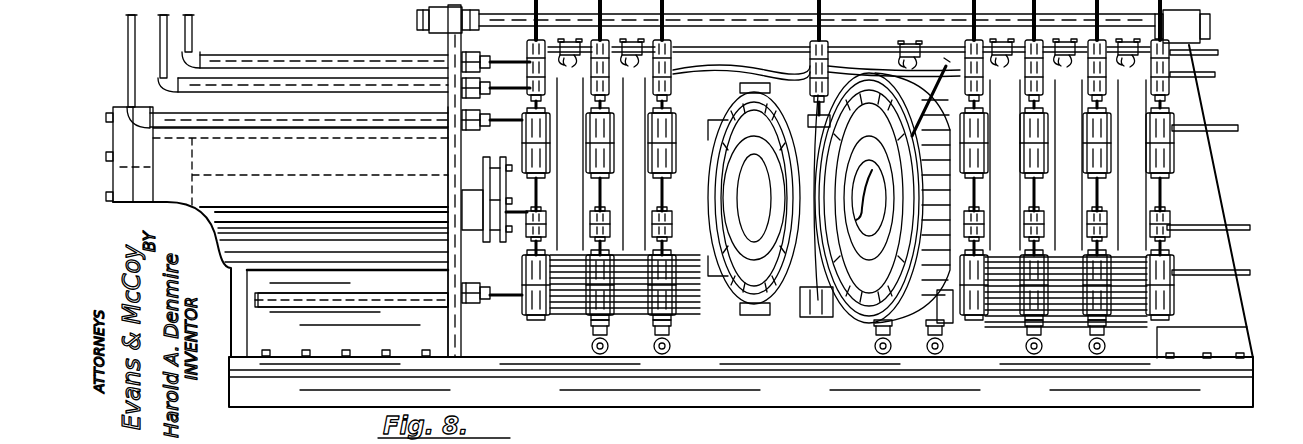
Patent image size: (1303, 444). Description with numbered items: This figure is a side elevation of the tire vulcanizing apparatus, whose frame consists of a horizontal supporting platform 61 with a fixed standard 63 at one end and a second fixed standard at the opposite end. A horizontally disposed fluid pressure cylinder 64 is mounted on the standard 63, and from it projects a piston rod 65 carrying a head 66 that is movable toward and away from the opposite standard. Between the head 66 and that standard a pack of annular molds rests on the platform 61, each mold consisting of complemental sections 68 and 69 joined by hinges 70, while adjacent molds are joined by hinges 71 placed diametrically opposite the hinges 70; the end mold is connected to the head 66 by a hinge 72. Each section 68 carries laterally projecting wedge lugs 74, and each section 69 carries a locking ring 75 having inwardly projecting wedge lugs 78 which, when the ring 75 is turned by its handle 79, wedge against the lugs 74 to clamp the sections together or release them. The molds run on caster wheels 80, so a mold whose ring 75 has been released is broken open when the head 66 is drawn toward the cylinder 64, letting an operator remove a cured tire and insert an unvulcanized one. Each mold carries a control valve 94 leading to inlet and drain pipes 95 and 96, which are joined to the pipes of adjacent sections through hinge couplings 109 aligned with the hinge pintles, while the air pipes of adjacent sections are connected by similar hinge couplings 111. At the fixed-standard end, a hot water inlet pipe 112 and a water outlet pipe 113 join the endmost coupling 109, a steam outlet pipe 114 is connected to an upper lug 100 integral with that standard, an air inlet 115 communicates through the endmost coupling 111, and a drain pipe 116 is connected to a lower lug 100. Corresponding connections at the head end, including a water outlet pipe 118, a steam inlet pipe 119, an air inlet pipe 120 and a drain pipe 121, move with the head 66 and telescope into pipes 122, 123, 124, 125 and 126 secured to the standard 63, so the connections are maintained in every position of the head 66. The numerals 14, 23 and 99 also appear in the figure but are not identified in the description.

The supply header pipe 14 is at (745, 50).
The frame standard 23 is at (1187, 140).
The platform 61 is at (767, 393).
The standard 63 is at (423, 57).
The fluid pressure cylinder 64 is at (283, 242).
The piston rod 65 is at (232, 177).
The head 66 is at (528, 106).
The mold section 68 is at (790, 68).
The mold section 69 is at (840, 318).
The hinges 70 is at (807, 296).
The hinges 71 is at (620, 122).
The hinge 72 is at (526, 137).
The wedge lugs 74 is at (752, 313).
The locking ring 75 is at (923, 357).
The wedge lugs 78 is at (853, 357).
The handle 79 is at (915, 137).
The caster wheels 80 is at (693, 357).
The control valve 94 is at (883, 59).
The inlet pipe 95 is at (896, 48).
The drain pipe 96 is at (936, 62).
The drum 99 is at (978, 267).
The lug 100 is at (1117, 125).
The hinge couplings 109 is at (986, 78).
The hinge couplings 111 is at (616, 213).
The hot water inlet pipe 112 is at (1218, 52).
The water outlet pipe 113 is at (1215, 77).
The steam outlet pipe 114 is at (1238, 128).
The air inlet 115 is at (1250, 228).
The drain pipe 116 is at (1250, 272).
The water outlet pipe 118 is at (492, 64).
The steam inlet pipe 119 is at (461, 143).
The air inlet pipe 120 is at (538, 205).
The drain pipe 121 is at (490, 308).
The pipe 122 is at (322, 62).
The pipe 123 is at (410, 82).
The pipe 124 is at (243, 127).
The pipe 125 is at (300, 213).
The pipe 126 is at (333, 303).